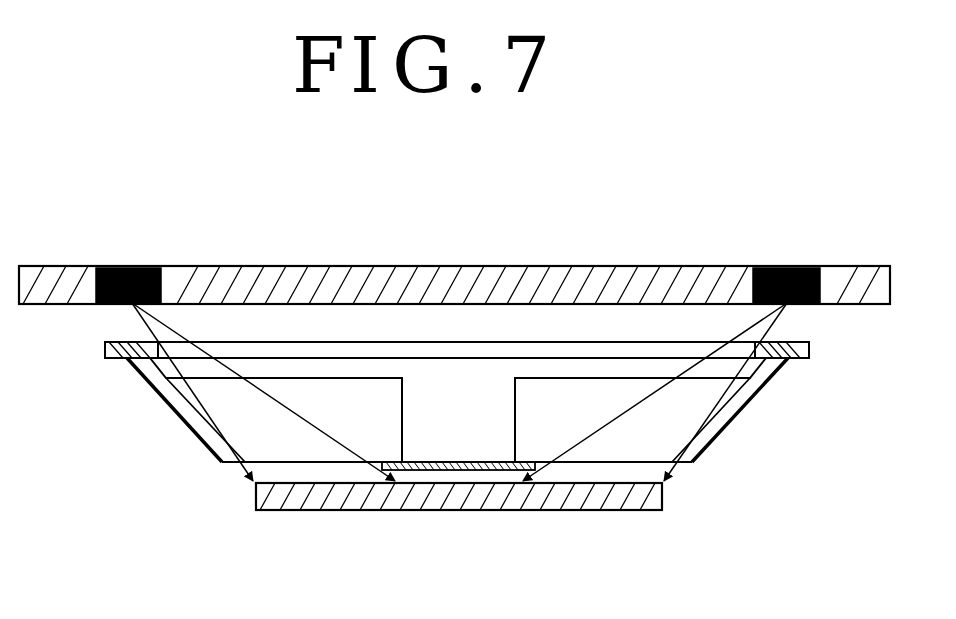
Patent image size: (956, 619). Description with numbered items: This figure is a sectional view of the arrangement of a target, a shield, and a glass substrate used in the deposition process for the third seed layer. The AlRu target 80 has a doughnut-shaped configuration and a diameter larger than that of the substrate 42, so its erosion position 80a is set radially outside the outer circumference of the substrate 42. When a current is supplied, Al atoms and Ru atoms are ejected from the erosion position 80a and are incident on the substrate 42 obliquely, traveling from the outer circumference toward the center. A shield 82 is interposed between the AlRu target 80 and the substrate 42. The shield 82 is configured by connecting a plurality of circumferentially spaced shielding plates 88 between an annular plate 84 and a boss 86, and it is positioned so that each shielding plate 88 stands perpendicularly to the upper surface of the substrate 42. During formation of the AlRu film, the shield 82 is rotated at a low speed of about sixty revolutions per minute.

The AlRu target 80 is at (459, 276).
The erosion position 80a is at (133, 284).
The annular plate 84 is at (811, 352).
The shield 82 is at (146, 400).
The shielding plates 88 is at (210, 428).
The boss 86 is at (457, 472).
The substrate 42 is at (531, 512).